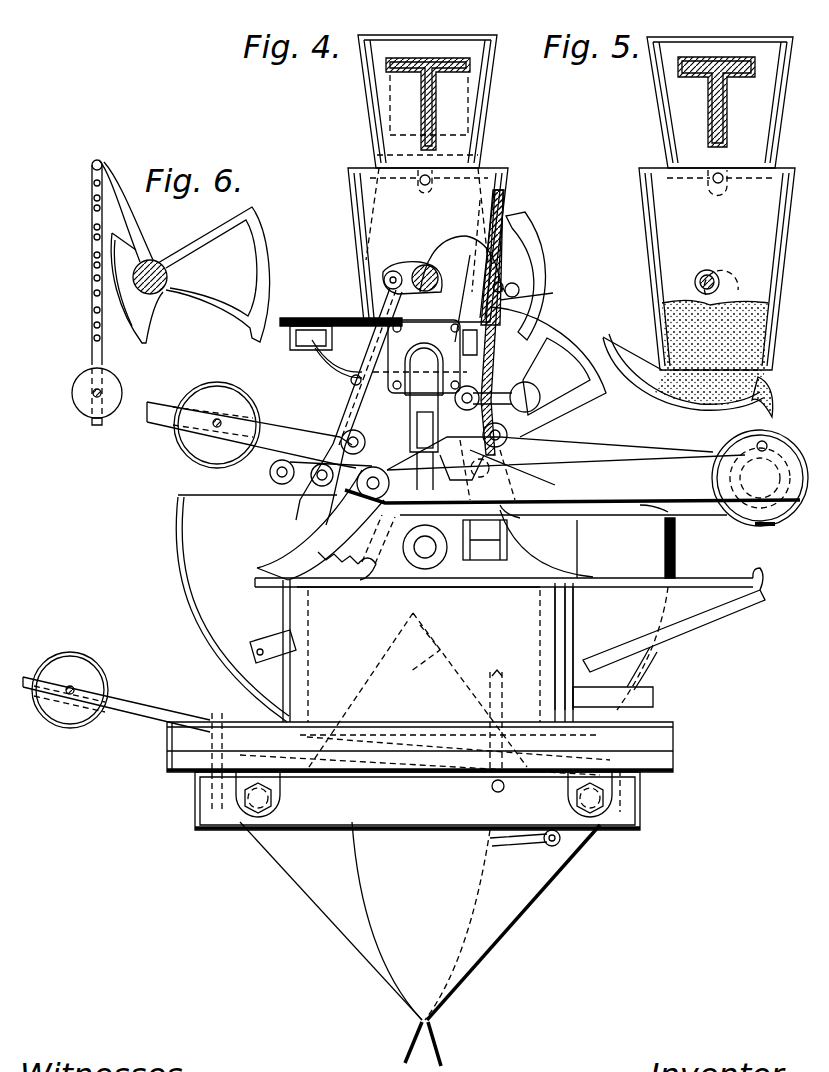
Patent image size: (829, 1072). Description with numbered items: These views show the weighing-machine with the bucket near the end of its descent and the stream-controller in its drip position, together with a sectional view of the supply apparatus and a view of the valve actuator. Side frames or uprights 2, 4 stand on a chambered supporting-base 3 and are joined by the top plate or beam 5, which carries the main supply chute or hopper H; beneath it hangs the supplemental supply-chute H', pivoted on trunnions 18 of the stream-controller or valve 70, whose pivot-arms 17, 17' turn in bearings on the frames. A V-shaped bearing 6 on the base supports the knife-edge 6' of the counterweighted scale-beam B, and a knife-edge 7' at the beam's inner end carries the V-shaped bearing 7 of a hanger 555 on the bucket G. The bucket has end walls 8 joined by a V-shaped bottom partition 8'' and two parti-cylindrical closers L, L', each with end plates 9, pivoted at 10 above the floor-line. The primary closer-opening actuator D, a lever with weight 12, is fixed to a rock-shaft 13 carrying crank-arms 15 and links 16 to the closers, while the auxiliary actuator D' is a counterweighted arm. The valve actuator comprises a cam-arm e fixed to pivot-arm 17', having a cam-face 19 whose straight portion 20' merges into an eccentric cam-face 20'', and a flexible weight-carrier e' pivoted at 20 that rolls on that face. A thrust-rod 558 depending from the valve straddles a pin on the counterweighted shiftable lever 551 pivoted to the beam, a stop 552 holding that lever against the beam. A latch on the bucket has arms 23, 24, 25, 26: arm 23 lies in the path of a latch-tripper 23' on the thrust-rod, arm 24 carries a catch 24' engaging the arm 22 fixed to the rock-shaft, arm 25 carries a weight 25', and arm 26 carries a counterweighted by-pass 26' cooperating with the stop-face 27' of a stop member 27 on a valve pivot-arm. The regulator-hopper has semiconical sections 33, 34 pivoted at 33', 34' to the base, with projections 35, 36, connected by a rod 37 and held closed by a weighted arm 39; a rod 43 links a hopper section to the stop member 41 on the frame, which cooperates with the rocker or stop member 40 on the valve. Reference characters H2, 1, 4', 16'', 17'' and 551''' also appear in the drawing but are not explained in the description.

In FIG. 4, the top plate or beam 5 is at (431, 60).
In FIG. 5, the top plate or beam 5 is at (722, 62).
In FIG. 4, the main supply chute or hopper H is at (439, 101).
In FIG. 5, the main supply chute or hopper H is at (702, 102).
In FIG. 4, the supplemental supply-chute H' is at (406, 245).
In FIG. 5, the supplemental supply-chute H' is at (695, 269).
In FIG. 4, the hopper discharge H2 is at (421, 921).
In FIG. 4, the lever 1 is at (478, 382).
In FIG. 4, the side frame or upright 2 is at (520, 550).
In FIG. 4, the chambered supporting-base 3 is at (296, 666).
In FIG. 4, the side frame or upright 4 is at (522, 434).
In FIG. 4, the arm 4' is at (536, 292).
In FIG. 4, the V-shaped bearing 6 is at (487, 485).
In FIG. 4, the pivot or knife-edge 6' is at (496, 468).
In FIG. 4, the V-shaped bearing 7 is at (412, 451).
In FIG. 4, the knife-edge 7' is at (378, 536).
In FIG. 4, the end wall 8 is at (320, 525).
In FIG. 4, the V-shaped partition 8'' is at (458, 691).
In FIG. 4, the end plate 9 is at (670, 566).
In FIG. 4, the pivotal support of closers 10 is at (420, 558).
In FIG. 4, the weight 12 is at (216, 425).
In FIG. 4, the rock-shaft 13 is at (340, 430).
In FIG. 4, the crank-arm 15 is at (468, 410).
In FIG. 4, the link 16 is at (347, 555).
In FIG. 4, the frame hook 16'' is at (531, 517).
In FIG. 4, the pivot-arm 17 is at (411, 263).
In FIG. 5, the pivot-arm 17' is at (730, 264).
In FIG. 6, the hub 17'' is at (163, 291).
In FIG. 5, the trunnion 18 is at (703, 272).
In FIG. 6, the force-modifying cam-face 19 is at (92, 280).
In FIG. 6, the pivot of weight-carrier 20 is at (97, 283).
In FIG. 6, the straight portion of working face 20' is at (75, 229).
In FIG. 6, the eccentric cam-face 20'' is at (82, 328).
In FIG. 4, the latch-engaging arm 22 is at (378, 434).
In FIG. 4, the latch arm 23 is at (351, 400).
In FIG. 4, the latch-tripper 23' is at (318, 338).
In FIG. 4, the latch arm 24 is at (424, 397).
In FIG. 4, the catch or abutment 24' is at (511, 470).
In FIG. 4, the latch arm 25 is at (519, 375).
In FIG. 4, the weight 25' is at (542, 389).
In FIG. 4, the latch arm 26 is at (425, 345).
In FIG. 4, the counterweighted by-pass 26' is at (508, 275).
In FIG. 4, the stop member 27 is at (441, 249).
In FIG. 4, the stop-face 27' is at (477, 257).
In FIG. 4, the semiconical hopper-section 33 is at (331, 921).
In FIG. 4, the pivot of hopper-section 33' is at (279, 794).
In FIG. 4, the semiconical hopper-section 34 is at (513, 922).
In FIG. 4, the pivot of hopper-section 34' is at (570, 794).
In FIG. 4, the angularly-disposed projection 35 is at (410, 1040).
In FIG. 4, the angularly-disposed projection 36 is at (437, 1042).
In FIG. 4, the connecting rod or strap 37 is at (525, 846).
In FIG. 4, the weighted arm 39 is at (140, 712).
In FIG. 4, the rocker or stop member 40 is at (540, 240).
In FIG. 6, the rocker or stop member 40 is at (260, 232).
In FIG. 4, the stop member 41 is at (560, 336).
In FIG. 4, the stop-member-actuating rod 43 is at (512, 682).
In FIG. 4, the stream-controller or valve 70 is at (318, 350).
In FIG. 5, the stream-controller or valve 70 is at (640, 323).
In FIG. 4, the counterweighted shiftable lever 551 is at (572, 485).
In FIG. 4, the fork 551''' is at (306, 493).
In FIG. 4, the stop 552 is at (768, 444).
In FIG. 4, the hanger 555 is at (395, 322).
In FIG. 4, the thrust-rod 558 is at (412, 288).
In FIG. 4, the counterweighted scale-beam B is at (637, 450).
In FIG. 4, the closer-opening actuator D is at (243, 433).
In FIG. 4, the auxiliary actuator D' is at (265, 475).
In FIG. 4, the load-receiver or bucket G is at (241, 608).
In FIG. 4, the bucket-section or closer L is at (485, 584).
In FIG. 4, the bucket-section or closer L' is at (622, 541).
In FIG. 6, the valve-actuator member e is at (126, 211).
In FIG. 6, the valve-actuator member e' is at (79, 195).